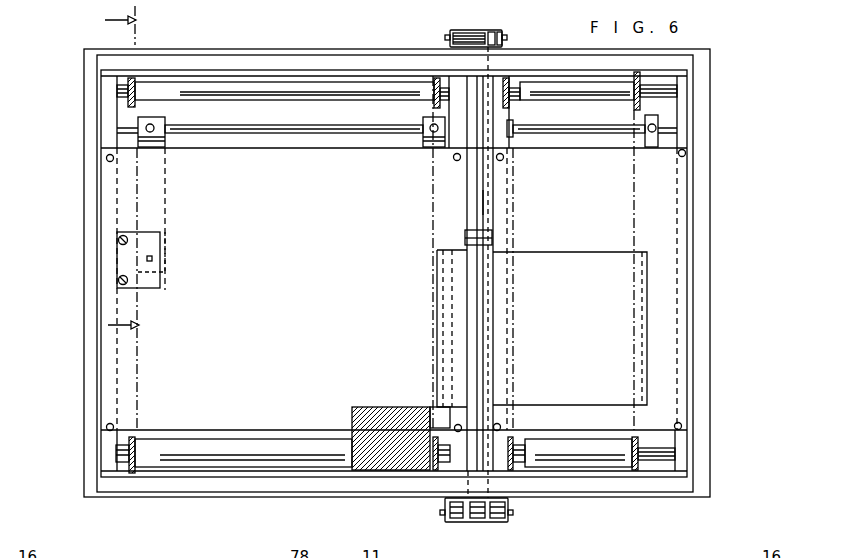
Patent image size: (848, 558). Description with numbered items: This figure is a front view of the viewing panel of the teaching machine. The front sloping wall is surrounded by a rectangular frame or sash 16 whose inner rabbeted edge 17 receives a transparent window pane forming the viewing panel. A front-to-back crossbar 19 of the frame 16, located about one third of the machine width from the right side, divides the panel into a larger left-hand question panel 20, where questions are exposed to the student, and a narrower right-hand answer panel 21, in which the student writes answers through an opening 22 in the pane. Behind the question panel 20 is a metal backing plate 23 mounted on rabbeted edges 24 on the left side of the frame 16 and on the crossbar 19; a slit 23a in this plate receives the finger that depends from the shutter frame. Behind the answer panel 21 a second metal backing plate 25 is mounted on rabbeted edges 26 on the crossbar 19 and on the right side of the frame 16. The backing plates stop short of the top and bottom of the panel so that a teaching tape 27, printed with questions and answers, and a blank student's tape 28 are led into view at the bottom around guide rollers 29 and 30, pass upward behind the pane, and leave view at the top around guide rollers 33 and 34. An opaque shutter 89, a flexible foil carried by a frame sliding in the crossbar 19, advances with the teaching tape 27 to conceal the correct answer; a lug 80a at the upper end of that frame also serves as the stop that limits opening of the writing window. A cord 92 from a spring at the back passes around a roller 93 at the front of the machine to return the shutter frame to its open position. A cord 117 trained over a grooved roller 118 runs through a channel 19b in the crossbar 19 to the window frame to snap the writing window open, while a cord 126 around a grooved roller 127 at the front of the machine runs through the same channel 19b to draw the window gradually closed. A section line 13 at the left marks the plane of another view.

The section line 13- 13 is at (122, 178).
The rectangular frame or sash 16 is at (92, 202).
The inner rabbeted edge 17 is at (216, 62).
The crossbar 19 is at (477, 180).
The channel 19b is at (490, 208).
The question panel 20 is at (286, 284).
The answer panel 21 is at (579, 221).
The opening 22 is at (573, 253).
The metal backing plate 23 is at (272, 145).
The slit 23a is at (433, 262).
The rabbeted edges 24 is at (110, 133).
The metal backing plate 25 is at (557, 145).
The rabbeted edges 26 is at (678, 137).
The teaching tape 27 is at (432, 175).
The blank tape 28 is at (634, 178).
The guide roller 29 is at (284, 449).
The guide roller 30 is at (557, 447).
The guide roller 33 is at (300, 91).
The guide roller 34 is at (591, 90).
The lug 80a is at (487, 238).
The opaque shutter 89 is at (377, 406).
The cord 92 is at (466, 483).
The roller 93 is at (473, 537).
The cord 117 is at (487, 62).
The grooved roller 118 is at (473, 37).
The cord 126 is at (493, 483).
The grooved roller 127 is at (488, 522).